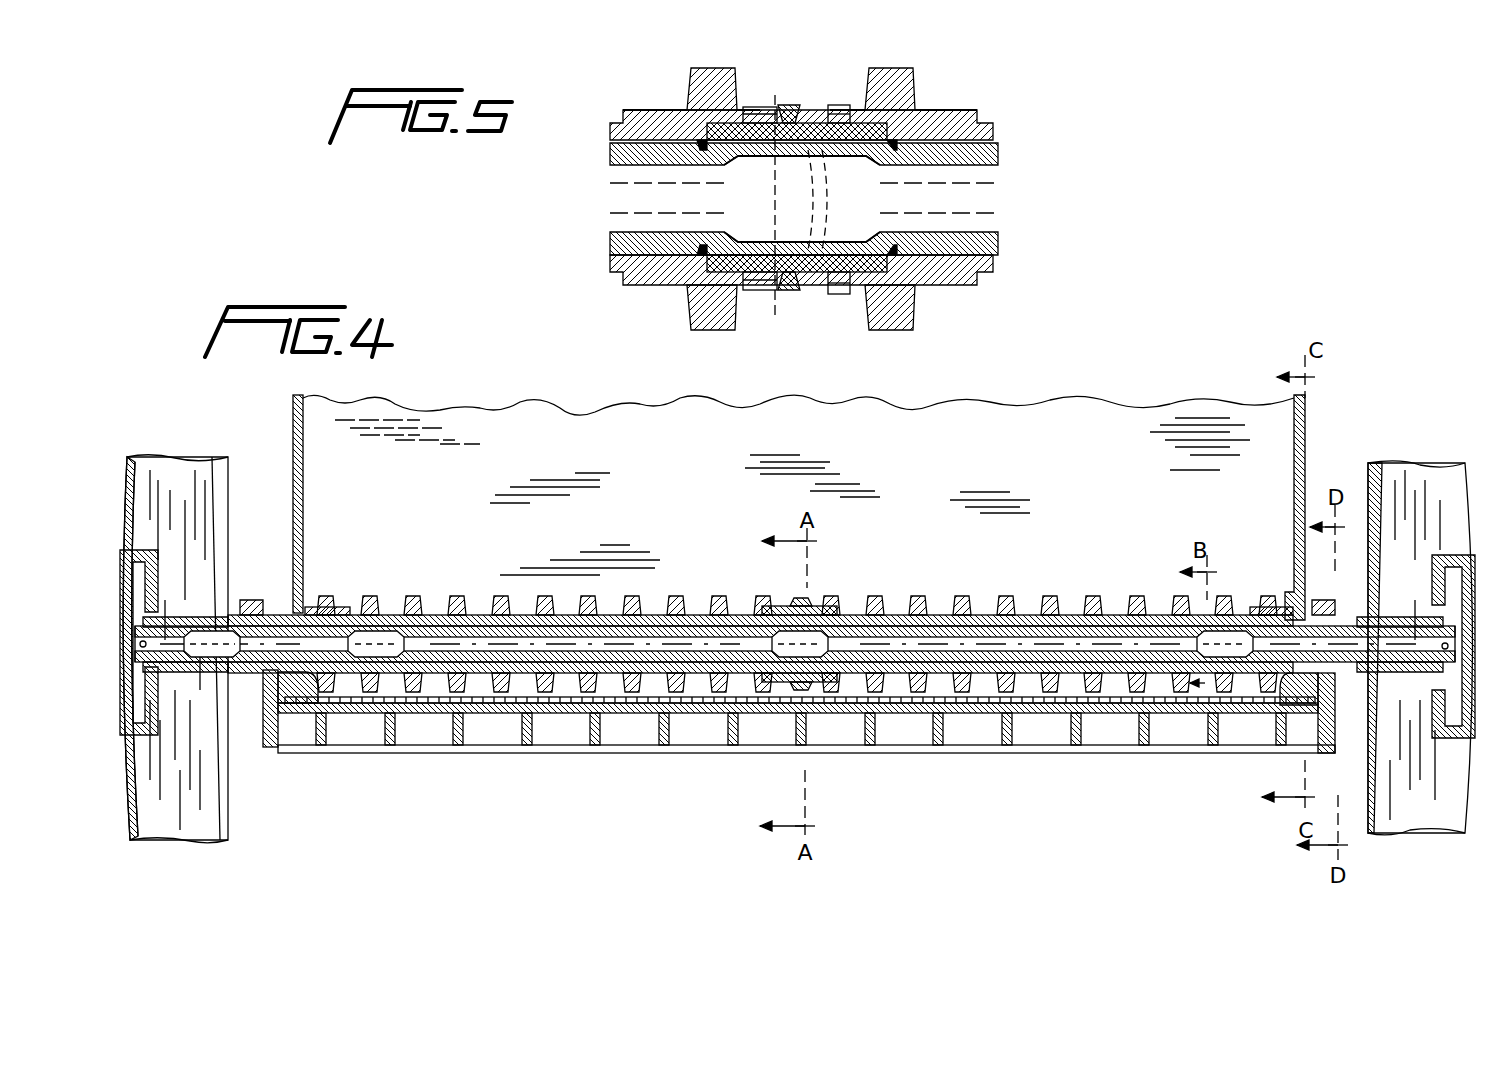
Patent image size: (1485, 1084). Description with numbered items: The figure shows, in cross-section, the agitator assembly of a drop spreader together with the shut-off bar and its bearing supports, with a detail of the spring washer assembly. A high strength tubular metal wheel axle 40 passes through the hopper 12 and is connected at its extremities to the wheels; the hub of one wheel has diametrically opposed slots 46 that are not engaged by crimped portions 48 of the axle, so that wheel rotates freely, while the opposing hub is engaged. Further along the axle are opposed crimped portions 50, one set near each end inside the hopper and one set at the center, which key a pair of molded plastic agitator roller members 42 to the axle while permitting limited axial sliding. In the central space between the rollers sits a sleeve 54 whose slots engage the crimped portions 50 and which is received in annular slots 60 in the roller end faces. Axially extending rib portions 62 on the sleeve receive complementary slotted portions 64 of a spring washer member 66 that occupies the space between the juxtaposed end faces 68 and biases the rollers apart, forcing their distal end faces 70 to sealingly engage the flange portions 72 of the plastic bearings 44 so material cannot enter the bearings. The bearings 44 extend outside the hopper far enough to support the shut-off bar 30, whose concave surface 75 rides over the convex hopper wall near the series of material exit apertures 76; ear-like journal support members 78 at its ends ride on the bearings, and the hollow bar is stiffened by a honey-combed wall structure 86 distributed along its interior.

In FIG. 4, the hopper 12 is at (985, 476).
In FIG. 4, the shut-off bar 30 is at (445, 754).
In FIG. 5, the tubular metal wheel axle 40 is at (998, 152).
In FIG. 4, the tubular metal wheel axle 40 is at (1035, 617).
In FIG. 5, the agitator roller members 42 is at (985, 112).
In FIG. 4, the agitator roller members 42 is at (1128, 598).
In FIG. 4, the bearings 44 is at (250, 625).
In FIG. 4, the slots 46 is at (183, 605).
In FIG. 4, the crimped portions 48 is at (208, 613).
In FIG. 5, the crimped portions 50 is at (742, 152).
In FIG. 4, the crimped portions 50 is at (398, 630).
In FIG. 5, the sleeve 54 is at (722, 122).
In FIG. 4, the sleeve 54 is at (838, 610).
In FIG. 5, the annular slots 60 is at (713, 130).
In FIG. 5, the rib portions 62 is at (705, 100).
In FIG. 5, the slotted portions 64 is at (795, 118).
In FIG. 5, the spring washer member 66 is at (790, 108).
In FIG. 4, the spring washer member 66 is at (802, 605).
In FIG. 5, the end faces 68 is at (838, 108).
In FIG. 4, the distal end faces 70 is at (338, 606).
In FIG. 4, the flange portions 72 is at (302, 612).
In FIG. 4, the concave surface 75 is at (666, 746).
In FIG. 4, the material exit apertures 76 is at (527, 746).
In FIG. 4, the journal support members 78 is at (270, 748).
In FIG. 4, the honey-combed wall structure 86 is at (600, 714).